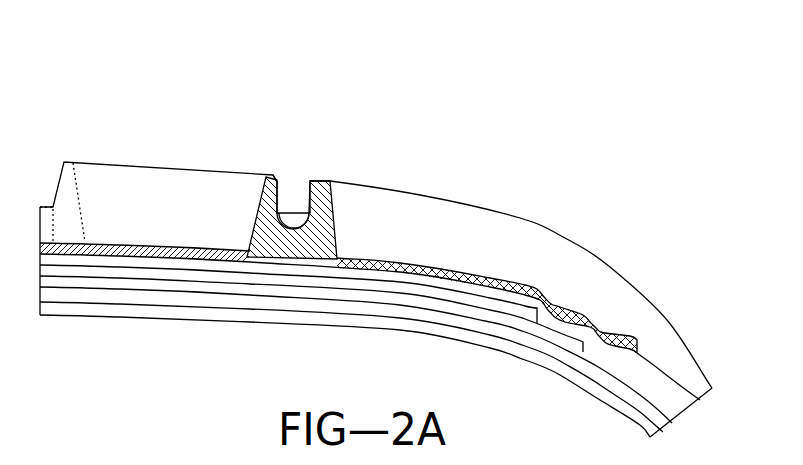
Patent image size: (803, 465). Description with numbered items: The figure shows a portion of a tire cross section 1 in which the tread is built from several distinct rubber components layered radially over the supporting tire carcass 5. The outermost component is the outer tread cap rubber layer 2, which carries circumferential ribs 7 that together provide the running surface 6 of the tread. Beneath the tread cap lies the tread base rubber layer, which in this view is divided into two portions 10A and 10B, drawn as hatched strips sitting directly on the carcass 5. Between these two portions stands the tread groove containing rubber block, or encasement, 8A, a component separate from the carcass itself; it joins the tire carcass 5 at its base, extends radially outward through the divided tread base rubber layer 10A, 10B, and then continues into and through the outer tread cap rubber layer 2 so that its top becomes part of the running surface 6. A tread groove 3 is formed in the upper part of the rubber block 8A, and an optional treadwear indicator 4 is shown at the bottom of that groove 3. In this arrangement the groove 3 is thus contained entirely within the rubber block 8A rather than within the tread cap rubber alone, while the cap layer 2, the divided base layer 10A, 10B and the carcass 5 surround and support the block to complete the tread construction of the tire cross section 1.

The tire cross section 1 is at (80, 121).
The outer tread cap rubber layer 2 is at (221, 170).
The groove 3 is at (284, 183).
The treadwear indicator 4 is at (302, 212).
The tire carcass 5 is at (200, 297).
The running surface 6 is at (521, 218).
The circumferential ribs 7 is at (207, 200).
The tread groove containing rubber block 8A is at (338, 205).
The divided tread base rubber layer portion 10A is at (162, 243).
The divided tread base rubber layer portion 10B is at (432, 265).